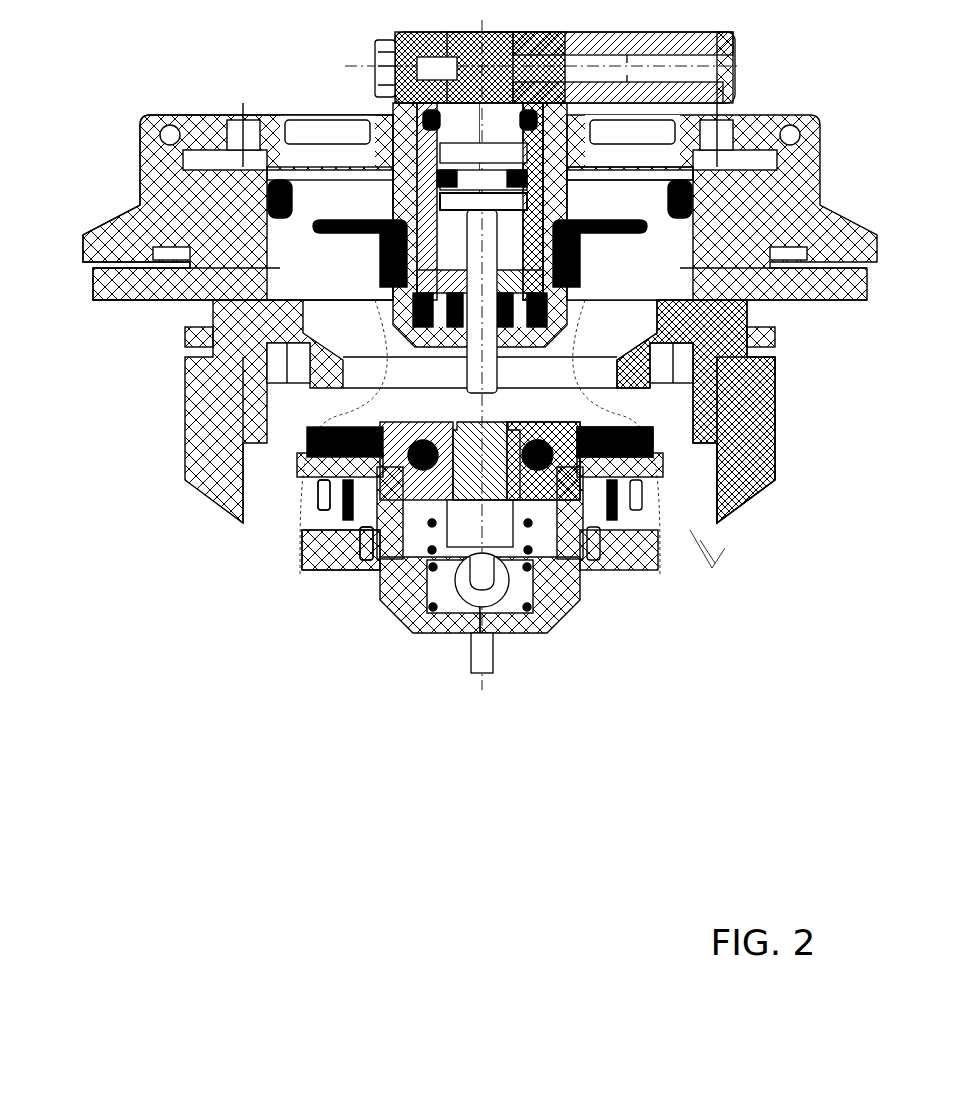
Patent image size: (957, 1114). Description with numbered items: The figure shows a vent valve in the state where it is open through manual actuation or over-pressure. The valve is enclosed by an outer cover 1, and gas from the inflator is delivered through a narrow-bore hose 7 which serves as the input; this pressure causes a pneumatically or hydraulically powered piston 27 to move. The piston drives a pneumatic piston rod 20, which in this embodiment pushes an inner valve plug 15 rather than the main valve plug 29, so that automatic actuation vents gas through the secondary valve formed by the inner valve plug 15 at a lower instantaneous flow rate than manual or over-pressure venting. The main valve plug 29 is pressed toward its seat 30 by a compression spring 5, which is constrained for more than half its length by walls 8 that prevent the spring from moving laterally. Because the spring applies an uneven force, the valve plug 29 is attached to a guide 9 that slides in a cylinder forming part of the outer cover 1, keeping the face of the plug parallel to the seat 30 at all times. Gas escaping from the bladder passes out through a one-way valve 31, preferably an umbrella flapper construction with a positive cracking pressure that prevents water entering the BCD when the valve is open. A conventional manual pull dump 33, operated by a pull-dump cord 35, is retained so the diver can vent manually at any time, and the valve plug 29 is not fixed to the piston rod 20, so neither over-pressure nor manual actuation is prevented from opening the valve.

The outer cover 1 is at (187, 427).
The compression spring 5 is at (636, 520).
The hose 7 is at (727, 80).
The walls 8 is at (360, 546).
The guide 9 is at (379, 581).
The inner valve plug 15 is at (526, 473).
The pneumatic piston rod 20 is at (617, 249).
The piston 27 is at (537, 160).
The valve plug 29 is at (660, 444).
The seat 30 is at (650, 398).
The one-way valve 31 is at (514, 219).
The manual pull dump 33 is at (499, 653).
The pull-dump cord 35 is at (503, 592).